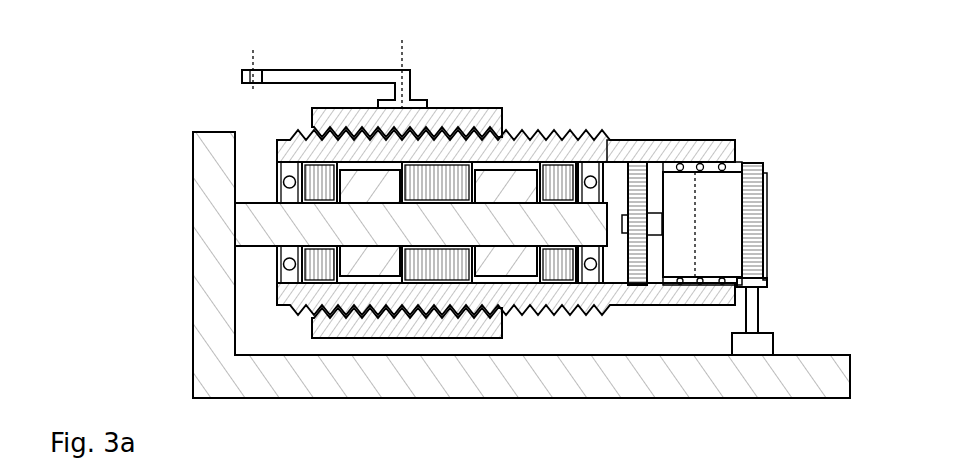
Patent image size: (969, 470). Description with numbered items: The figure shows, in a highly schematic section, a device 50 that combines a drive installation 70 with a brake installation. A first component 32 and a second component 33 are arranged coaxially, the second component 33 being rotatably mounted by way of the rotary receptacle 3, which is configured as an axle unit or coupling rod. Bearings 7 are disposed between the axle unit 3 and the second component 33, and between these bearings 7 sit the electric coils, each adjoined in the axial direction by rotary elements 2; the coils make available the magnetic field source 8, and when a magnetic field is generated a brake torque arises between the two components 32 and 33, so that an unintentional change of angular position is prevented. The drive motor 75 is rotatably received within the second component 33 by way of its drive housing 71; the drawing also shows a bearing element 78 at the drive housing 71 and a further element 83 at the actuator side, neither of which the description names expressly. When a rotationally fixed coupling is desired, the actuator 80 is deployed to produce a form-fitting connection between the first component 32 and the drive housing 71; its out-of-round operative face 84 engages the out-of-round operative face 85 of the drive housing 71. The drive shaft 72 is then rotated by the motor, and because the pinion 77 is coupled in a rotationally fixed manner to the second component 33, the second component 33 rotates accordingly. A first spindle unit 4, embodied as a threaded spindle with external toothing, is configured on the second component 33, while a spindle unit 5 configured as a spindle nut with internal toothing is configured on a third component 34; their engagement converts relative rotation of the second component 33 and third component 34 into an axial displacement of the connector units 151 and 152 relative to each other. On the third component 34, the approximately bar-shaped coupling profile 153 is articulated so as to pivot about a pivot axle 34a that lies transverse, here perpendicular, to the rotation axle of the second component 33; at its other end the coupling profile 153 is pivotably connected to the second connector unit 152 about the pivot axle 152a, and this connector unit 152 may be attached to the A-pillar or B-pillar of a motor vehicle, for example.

The rotary element 2 is at (438, 273).
The rotary receptacle 3 is at (260, 215).
The first spindle unit 4 is at (540, 127).
The spindle unit 5 is at (485, 242).
The bearing 7 is at (587, 283).
The magnetic field source 8 is at (365, 273).
The first component 32 is at (543, 390).
The second component 33 is at (627, 143).
The third component 34 is at (460, 105).
The pivot axle 34a is at (404, 60).
The device 50 is at (735, 241).
The drive installation 70 is at (790, 281).
The drive housing 71 is at (695, 285).
The drive shaft 72 is at (655, 226).
The drive motor 75 is at (725, 193).
The pinion 77 is at (640, 170).
The upper bearing 78 is at (683, 162).
The actuator 80 is at (745, 350).
The holder 83 is at (783, 277).
The out-of-round operative face 84 is at (767, 288).
The out-of-round operative face 85 is at (752, 237).
The connector unit 151 is at (218, 390).
The second connector unit 152 is at (242, 76).
The pivot axle 152a is at (253, 57).
The coupling profile 153 is at (345, 70).